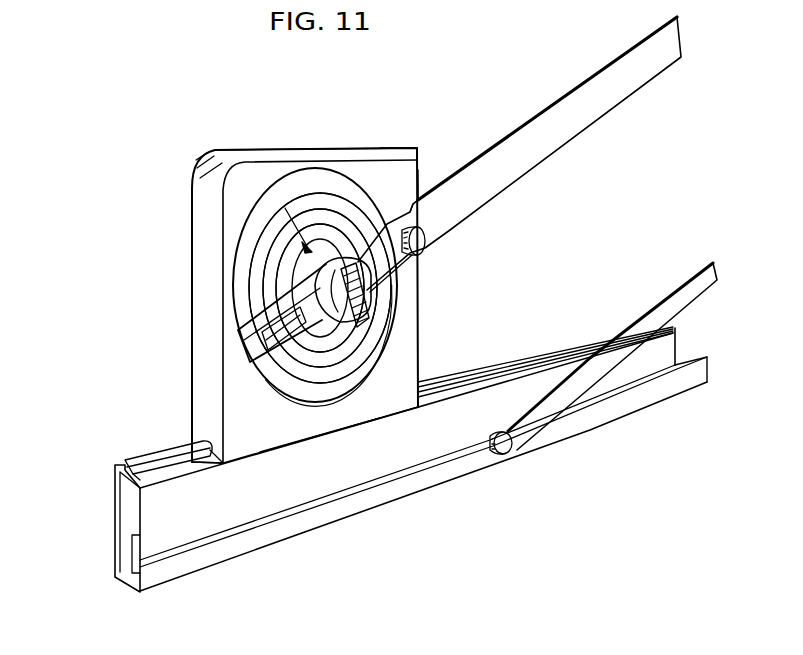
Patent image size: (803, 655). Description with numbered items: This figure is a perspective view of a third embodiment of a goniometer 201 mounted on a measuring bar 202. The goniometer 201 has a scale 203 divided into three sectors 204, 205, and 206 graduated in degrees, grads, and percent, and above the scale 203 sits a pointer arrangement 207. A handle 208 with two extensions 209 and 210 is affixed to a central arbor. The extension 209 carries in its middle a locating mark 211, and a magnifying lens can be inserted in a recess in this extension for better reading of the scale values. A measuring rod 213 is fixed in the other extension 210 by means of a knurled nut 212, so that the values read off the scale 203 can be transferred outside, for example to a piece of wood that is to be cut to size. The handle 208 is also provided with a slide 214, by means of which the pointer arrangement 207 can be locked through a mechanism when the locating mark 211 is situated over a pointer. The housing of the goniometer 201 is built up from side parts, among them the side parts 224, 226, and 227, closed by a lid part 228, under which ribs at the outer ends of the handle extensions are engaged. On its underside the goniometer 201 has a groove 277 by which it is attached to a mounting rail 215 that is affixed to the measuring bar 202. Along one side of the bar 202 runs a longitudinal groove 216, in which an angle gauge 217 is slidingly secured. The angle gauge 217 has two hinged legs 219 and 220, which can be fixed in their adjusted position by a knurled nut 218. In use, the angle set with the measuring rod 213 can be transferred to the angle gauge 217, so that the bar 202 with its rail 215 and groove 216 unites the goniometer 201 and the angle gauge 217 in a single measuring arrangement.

The goniometer 201 is at (222, 148).
The measuring bar 202 is at (115, 512).
The scale 203 is at (298, 188).
The sector 204 is at (323, 223).
The sector 205 is at (348, 213).
The sector 206 is at (387, 203).
The pointer arrangement 207 is at (285, 208).
The handle 208 is at (375, 285).
The extension 209 is at (252, 308).
The extension 210 is at (412, 176).
The locating mark 211 is at (245, 346).
The knurled nut 212 is at (424, 240).
The measuring rod 213 is at (530, 140).
The slide 214 is at (372, 328).
The mounting rail 215 is at (170, 452).
The longitudinal groove 216 is at (160, 553).
The angle gauge 217 is at (589, 428).
The knurled nut 218 is at (515, 450).
The hinged leg 219 is at (640, 392).
The hinged leg 220 is at (648, 323).
The side part 224 is at (205, 260).
The side part 226 is at (212, 452).
The side part 227 is at (260, 153).
The lid part 228 is at (288, 427).
The groove 277 is at (203, 430).